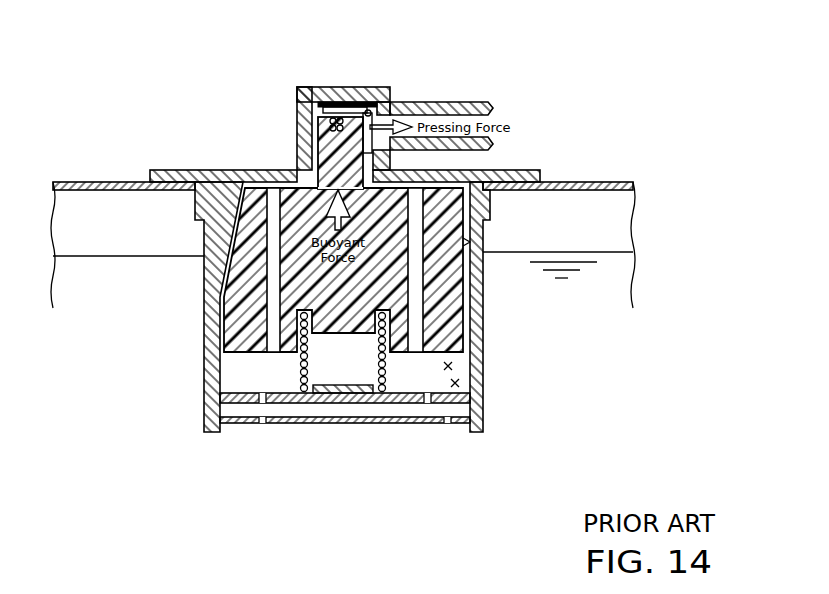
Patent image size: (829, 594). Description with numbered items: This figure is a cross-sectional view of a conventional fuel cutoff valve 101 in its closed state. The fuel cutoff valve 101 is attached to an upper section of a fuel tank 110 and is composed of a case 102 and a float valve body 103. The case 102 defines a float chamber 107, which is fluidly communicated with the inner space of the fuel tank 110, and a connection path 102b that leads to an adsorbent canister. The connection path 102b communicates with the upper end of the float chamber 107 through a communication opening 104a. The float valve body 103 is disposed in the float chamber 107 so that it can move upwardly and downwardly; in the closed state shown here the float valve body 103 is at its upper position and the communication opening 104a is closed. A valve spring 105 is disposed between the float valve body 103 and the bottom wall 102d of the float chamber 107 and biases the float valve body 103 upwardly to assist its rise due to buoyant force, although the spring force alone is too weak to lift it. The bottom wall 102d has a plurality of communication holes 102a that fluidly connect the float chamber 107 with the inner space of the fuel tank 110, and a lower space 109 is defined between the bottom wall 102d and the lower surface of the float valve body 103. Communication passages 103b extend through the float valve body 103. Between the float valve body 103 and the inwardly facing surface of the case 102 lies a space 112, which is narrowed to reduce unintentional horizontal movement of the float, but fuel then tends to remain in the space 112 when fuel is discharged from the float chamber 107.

The fuel cutoff valve 101 is at (260, 113).
The case 102 is at (202, 353).
The communication holes 102a is at (262, 398).
The connection path 102b is at (492, 118).
The bottom wall 102d is at (320, 425).
The float valve body 103 is at (458, 287).
The communication passages 103b is at (273, 307).
The communication opening 104a is at (382, 106).
The valve spring 105 is at (303, 362).
The float chamber 107 is at (456, 366).
The lower space 109 is at (462, 384).
The fuel tank 110 is at (584, 181).
The space 112 is at (468, 242).